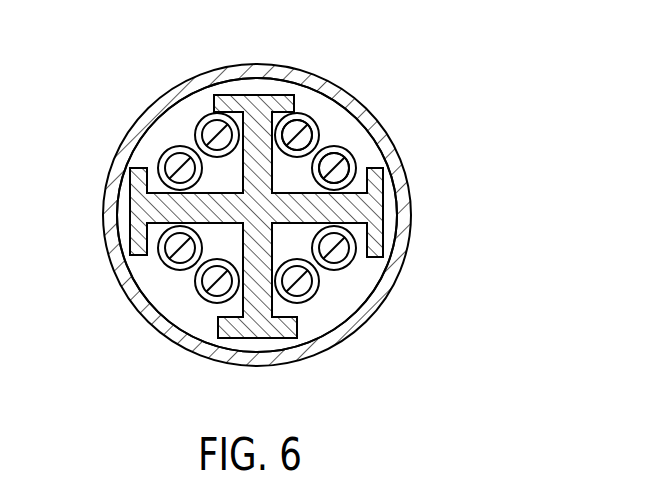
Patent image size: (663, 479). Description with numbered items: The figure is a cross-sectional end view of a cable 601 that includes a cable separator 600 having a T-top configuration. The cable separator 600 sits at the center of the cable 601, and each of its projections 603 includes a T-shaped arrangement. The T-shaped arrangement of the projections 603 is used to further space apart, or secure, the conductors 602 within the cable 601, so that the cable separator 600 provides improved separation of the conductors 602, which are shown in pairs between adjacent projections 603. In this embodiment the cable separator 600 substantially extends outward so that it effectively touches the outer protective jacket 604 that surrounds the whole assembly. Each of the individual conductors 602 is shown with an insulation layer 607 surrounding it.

The cable separator 600 is at (390, 140).
The cable 601 is at (318, 188).
The conductors 602 is at (207, 140).
The projection 603 is at (255, 100).
The outer protective jacket 604 is at (243, 70).
The insulation layer 607 is at (297, 132).